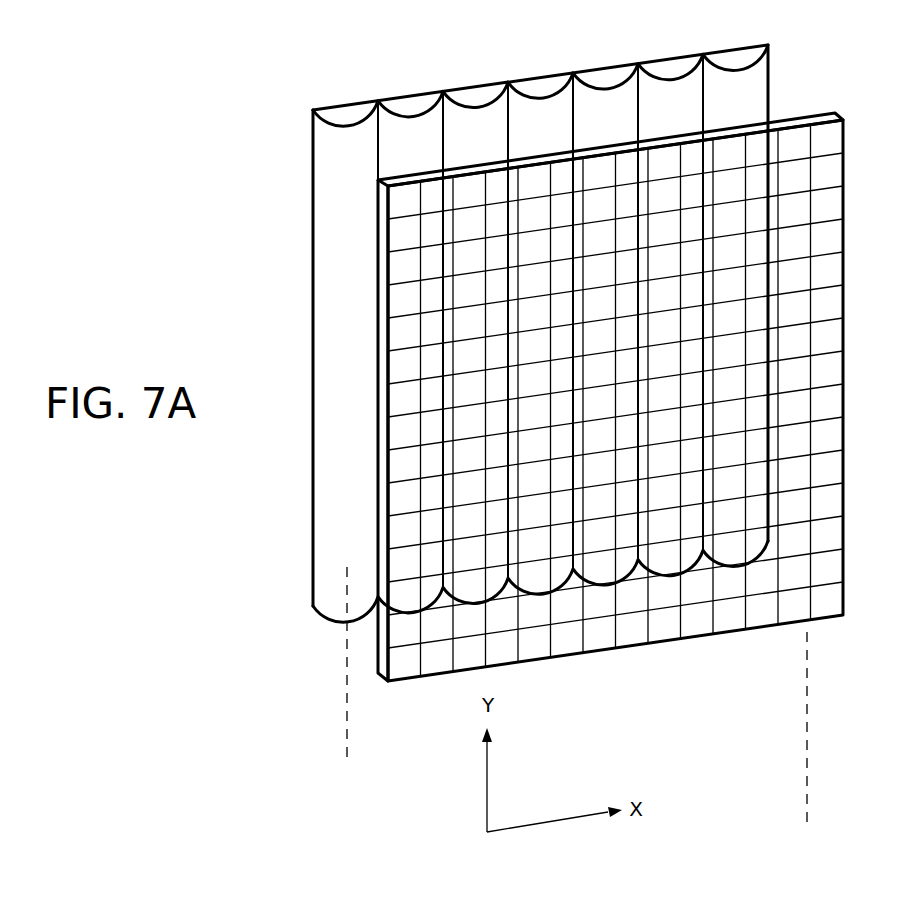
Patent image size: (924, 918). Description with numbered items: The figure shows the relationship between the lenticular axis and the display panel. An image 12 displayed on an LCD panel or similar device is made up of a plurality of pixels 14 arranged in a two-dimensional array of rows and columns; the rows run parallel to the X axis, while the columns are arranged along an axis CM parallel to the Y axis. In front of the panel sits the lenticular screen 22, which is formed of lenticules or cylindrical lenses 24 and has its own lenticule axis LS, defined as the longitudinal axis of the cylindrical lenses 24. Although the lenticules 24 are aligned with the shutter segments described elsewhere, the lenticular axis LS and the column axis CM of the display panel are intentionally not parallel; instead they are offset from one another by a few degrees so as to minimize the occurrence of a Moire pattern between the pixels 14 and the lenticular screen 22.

The image 12 is at (636, 366).
The pixels 14 is at (837, 175).
The lenticular screen 22 is at (509, 323).
The cylindrical lenses 24 is at (337, 262).
The lenticular axis LS is at (346, 670).
The column axis CM is at (805, 735).